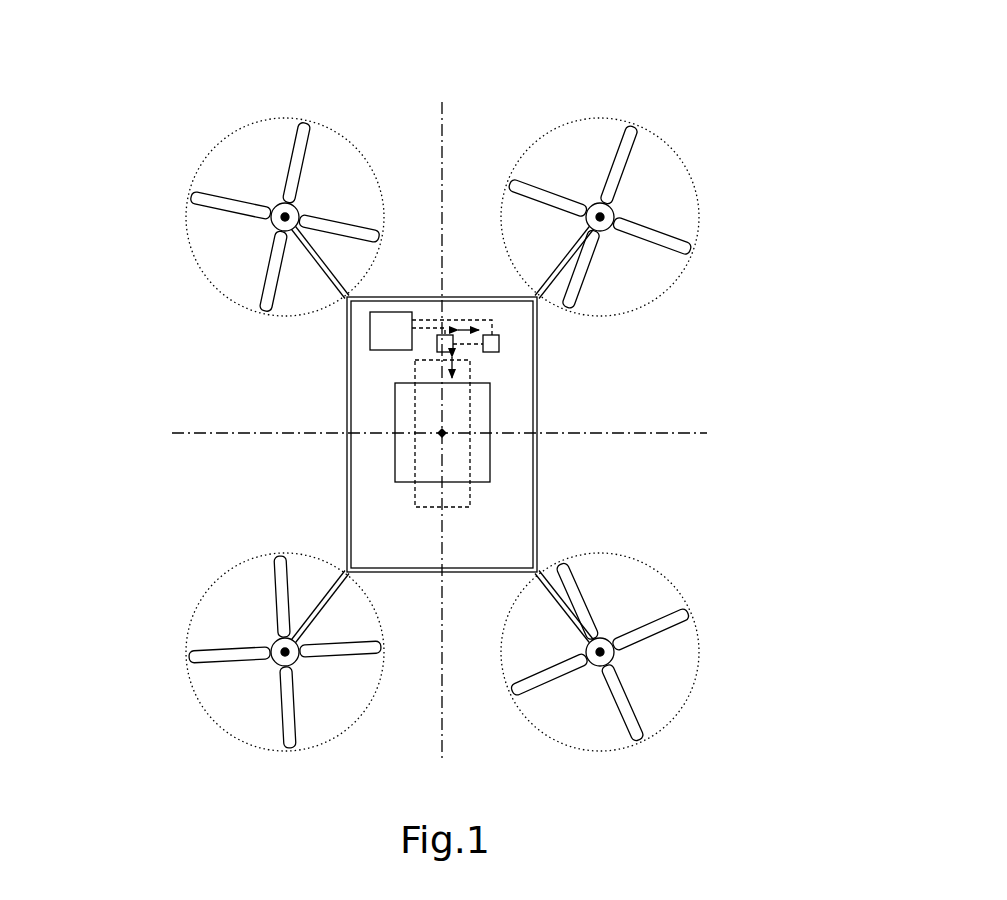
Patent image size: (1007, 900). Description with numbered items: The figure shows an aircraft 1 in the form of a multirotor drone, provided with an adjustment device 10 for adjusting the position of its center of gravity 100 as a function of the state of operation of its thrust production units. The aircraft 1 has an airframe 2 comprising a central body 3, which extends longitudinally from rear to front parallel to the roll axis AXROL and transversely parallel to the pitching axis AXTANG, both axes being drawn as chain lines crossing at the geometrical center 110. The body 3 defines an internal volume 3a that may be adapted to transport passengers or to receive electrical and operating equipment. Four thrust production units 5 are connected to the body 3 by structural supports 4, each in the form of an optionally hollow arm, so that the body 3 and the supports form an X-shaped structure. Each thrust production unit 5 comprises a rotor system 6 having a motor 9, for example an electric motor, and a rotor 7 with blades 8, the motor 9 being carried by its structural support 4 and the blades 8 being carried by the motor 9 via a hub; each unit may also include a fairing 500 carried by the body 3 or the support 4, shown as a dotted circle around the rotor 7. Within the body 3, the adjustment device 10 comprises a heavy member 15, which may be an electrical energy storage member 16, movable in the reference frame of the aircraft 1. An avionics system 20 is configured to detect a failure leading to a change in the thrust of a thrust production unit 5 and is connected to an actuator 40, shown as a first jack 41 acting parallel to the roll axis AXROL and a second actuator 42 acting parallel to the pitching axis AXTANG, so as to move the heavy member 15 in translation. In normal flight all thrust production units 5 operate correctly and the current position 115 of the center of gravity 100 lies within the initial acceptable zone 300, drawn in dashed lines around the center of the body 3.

The aircraft 1 is at (758, 78).
The airframe 2 is at (501, 434).
The body 3 is at (538, 475).
The internal volume 3a is at (466, 541).
The structural support 4 is at (560, 598).
The thrust production unit 5 is at (507, 455).
The rotor system 6 is at (507, 434).
The rotor 7 is at (483, 434).
The blades 8 is at (622, 150).
The motor 9 is at (615, 213).
The adjustment device 10 is at (337, 345).
The avionics system 20 is at (365, 330).
The actuator 40 is at (431, 365).
The first jack 41 is at (437, 345).
The second actuator 42 is at (500, 344).
The heavy member 15 is at (560, 427).
The electrical energy storage member 16 is at (495, 413).
The center of gravity 100 is at (278, 459).
The geometrical center 110 is at (278, 459).
The current position 115 is at (439, 435).
The initial acceptable zone 300 is at (470, 497).
The fairing 500 is at (483, 434).
The roll axis AXROL is at (442, 116).
The pitching axis AXTANG is at (703, 433).